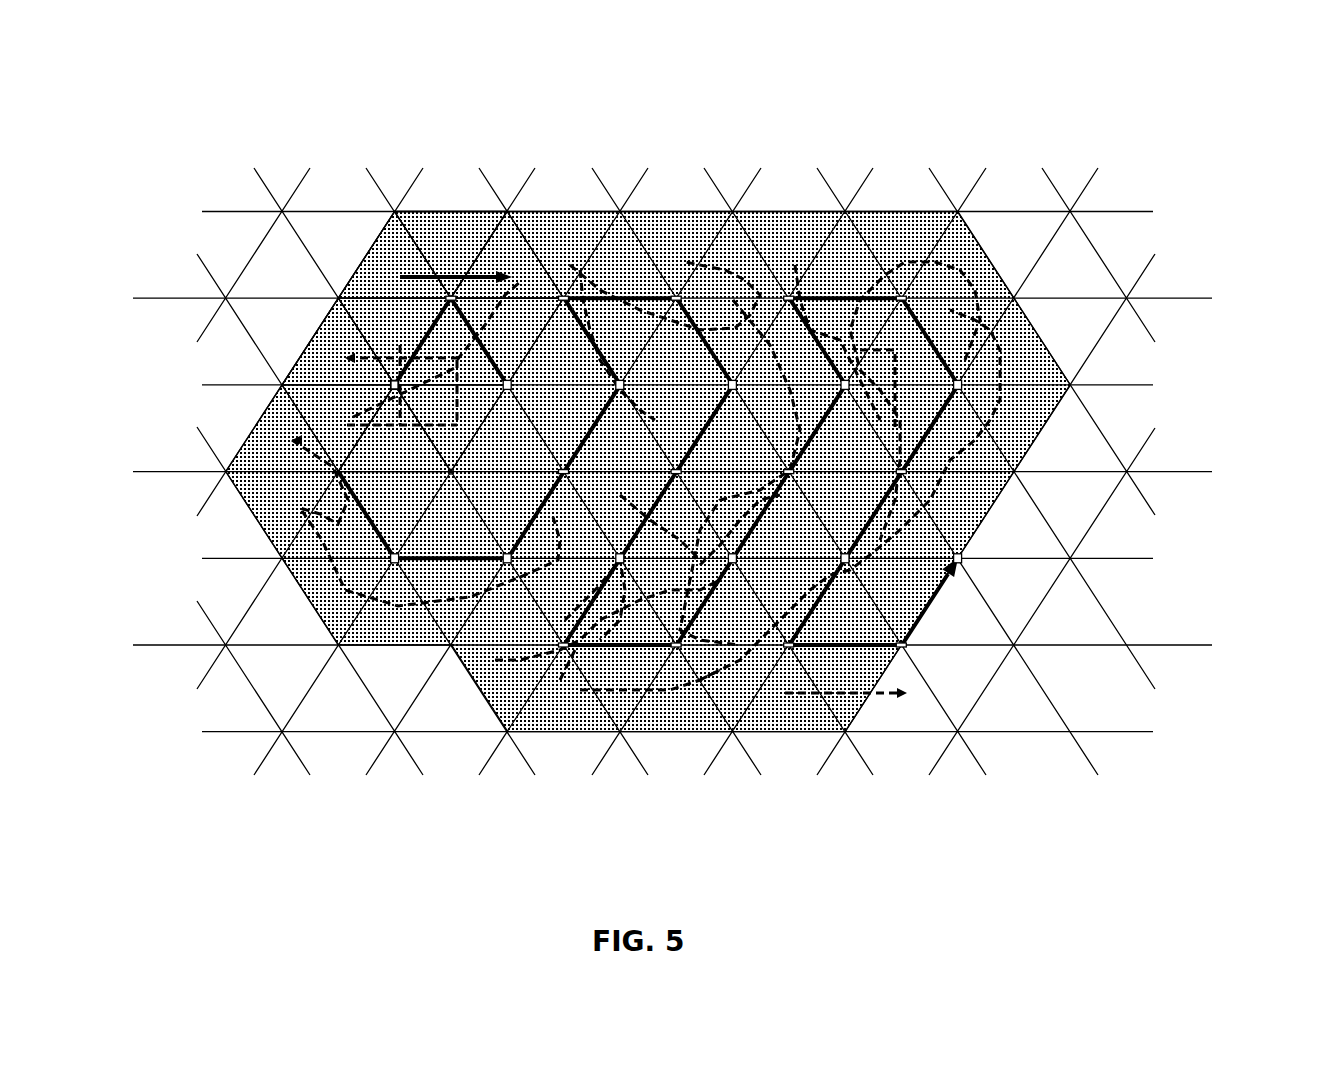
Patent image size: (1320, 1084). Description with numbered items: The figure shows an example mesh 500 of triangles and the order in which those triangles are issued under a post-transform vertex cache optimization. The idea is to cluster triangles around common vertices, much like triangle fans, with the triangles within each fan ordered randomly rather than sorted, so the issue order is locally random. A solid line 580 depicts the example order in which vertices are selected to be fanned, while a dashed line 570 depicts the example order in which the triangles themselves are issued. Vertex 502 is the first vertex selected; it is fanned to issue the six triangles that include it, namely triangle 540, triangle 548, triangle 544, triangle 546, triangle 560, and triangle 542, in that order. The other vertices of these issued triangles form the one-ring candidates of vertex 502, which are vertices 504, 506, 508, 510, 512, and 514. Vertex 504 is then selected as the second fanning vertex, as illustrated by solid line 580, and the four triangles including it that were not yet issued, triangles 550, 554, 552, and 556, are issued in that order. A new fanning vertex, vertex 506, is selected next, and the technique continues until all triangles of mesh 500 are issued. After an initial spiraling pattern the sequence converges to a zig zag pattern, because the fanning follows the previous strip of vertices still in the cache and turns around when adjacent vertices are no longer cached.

The mesh 500 is at (1173, 142).
The vertex 502 is at (340, 325).
The vertex 504 is at (451, 297).
The vertex 506 is at (515, 383).
The vertex 508 is at (455, 470).
The vertex 510 is at (292, 440).
The vertex 512 is at (280, 384).
The vertex 514 is at (395, 383).
The triangle 540 is at (394, 428).
The triangle 542 is at (338, 428).
The triangle 544 is at (338, 341).
The triangle 546 is at (451, 341).
The triangle 548 is at (394, 341).
The triangle 550 is at (394, 255).
The triangle 552 is at (451, 255).
The triangle 554 is at (507, 255).
The triangle 556 is at (507, 341).
The triangle 560 is at (451, 428).
The dashed line 570 is at (685, 262).
The solid line 580 is at (883, 298).